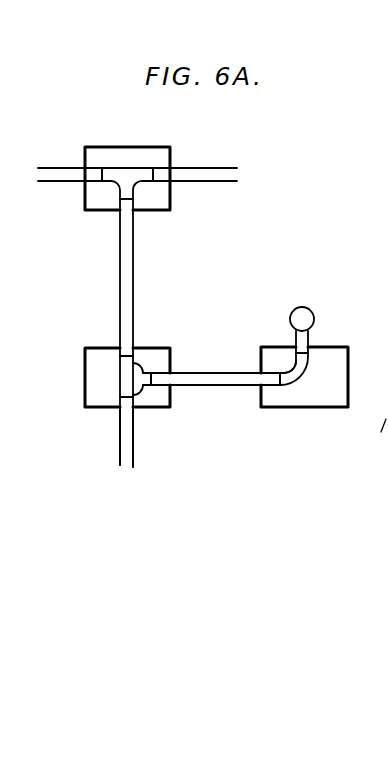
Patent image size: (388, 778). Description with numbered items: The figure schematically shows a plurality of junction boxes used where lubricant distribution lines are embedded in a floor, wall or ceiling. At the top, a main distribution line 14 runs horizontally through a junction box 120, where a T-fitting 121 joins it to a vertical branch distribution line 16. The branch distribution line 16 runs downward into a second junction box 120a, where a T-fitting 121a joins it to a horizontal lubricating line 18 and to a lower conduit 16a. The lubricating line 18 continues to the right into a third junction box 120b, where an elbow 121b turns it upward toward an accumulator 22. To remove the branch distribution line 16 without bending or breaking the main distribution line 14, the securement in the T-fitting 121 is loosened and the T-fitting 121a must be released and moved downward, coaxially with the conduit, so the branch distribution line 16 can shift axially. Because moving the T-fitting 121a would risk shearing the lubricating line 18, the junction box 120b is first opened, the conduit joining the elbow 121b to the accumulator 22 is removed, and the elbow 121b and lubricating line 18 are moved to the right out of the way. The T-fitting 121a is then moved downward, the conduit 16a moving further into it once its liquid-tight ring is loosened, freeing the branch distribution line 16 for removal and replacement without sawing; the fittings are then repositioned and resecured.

The main distribution line 14 is at (215, 167).
The branch distribution line 16 is at (133, 272).
The conduit 16a is at (120, 439).
The lubricating line 18 is at (212, 373).
The accumulator 22 is at (314, 318).
The junction box 120 is at (189, 144).
The junction box 120a is at (162, 329).
The junction box 120b is at (261, 418).
The T-fitting 121 is at (138, 168).
The T-fitting 121a is at (120, 373).
The elbow 121b is at (298, 376).